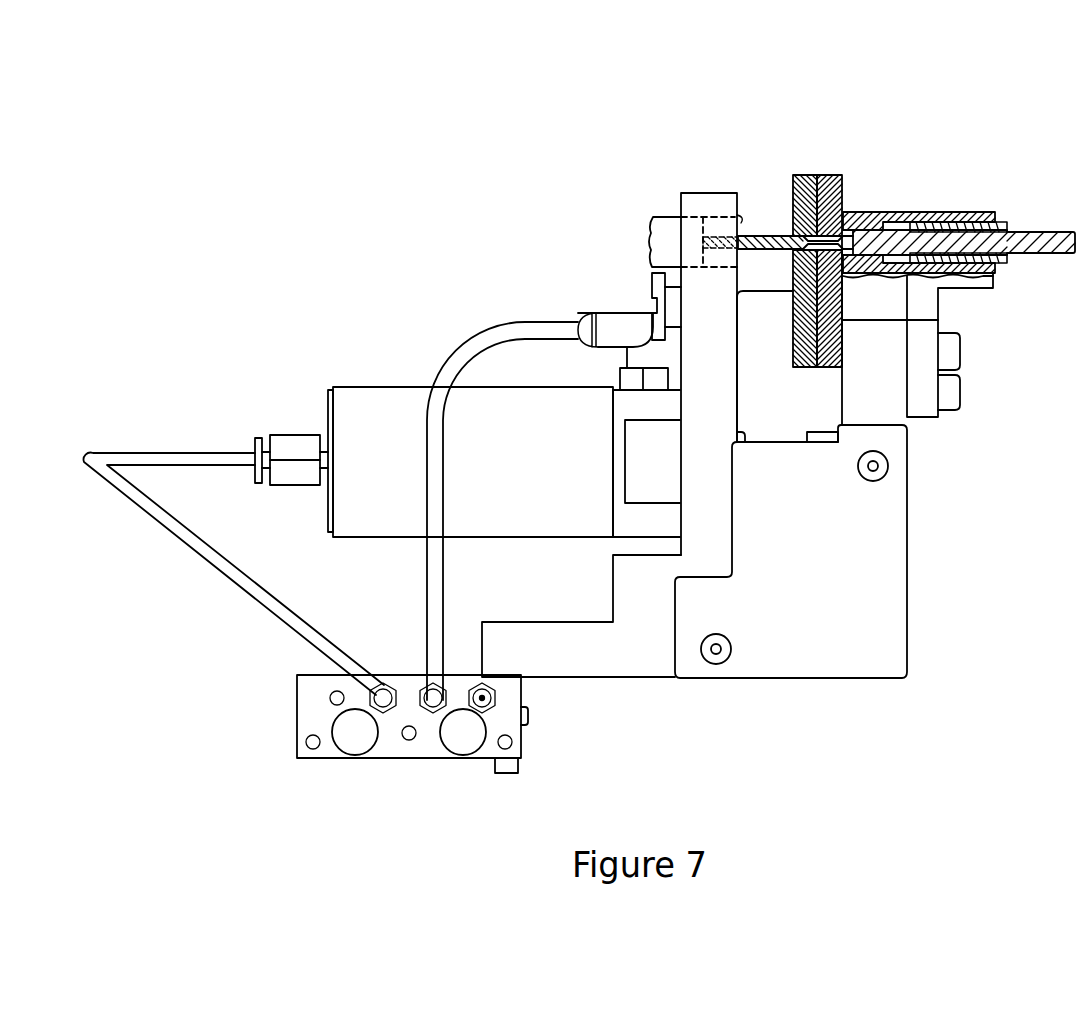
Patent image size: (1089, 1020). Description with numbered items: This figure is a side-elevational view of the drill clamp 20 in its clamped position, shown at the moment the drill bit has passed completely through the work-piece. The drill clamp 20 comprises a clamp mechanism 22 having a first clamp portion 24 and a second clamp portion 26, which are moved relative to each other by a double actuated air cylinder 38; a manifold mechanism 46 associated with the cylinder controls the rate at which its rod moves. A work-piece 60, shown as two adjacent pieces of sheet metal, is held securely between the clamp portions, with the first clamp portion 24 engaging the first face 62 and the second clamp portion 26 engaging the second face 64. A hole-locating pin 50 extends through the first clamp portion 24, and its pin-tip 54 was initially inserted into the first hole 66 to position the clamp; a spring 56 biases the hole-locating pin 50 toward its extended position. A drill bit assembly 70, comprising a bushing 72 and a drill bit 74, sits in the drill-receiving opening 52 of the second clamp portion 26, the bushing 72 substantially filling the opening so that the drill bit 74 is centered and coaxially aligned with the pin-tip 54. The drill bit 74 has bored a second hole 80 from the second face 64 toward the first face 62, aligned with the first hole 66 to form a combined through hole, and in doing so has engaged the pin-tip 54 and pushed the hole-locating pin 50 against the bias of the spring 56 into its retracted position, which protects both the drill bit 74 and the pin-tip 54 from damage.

The drill clamp 20 is at (565, 203).
The clamp mechanism 22 is at (783, 679).
The first clamp portion 24 is at (907, 570).
The second clamp portion 26 is at (703, 193).
The double actuated air cylinder 38 is at (372, 383).
The manifold mechanism 46 is at (428, 760).
The hole-locating pin 50 is at (1013, 232).
The drill-receiving opening 52 is at (744, 221).
The pin-tip 54 is at (850, 227).
The spring 56 is at (922, 218).
The work-piece 60 is at (809, 207).
The first face 62 is at (817, 173).
The second face 64 is at (795, 187).
The first hole 66 is at (860, 277).
The drill bit assembly 70 is at (648, 215).
The bushing 72 is at (667, 217).
The drill bit 74 is at (767, 236).
The second hole 80 is at (790, 293).